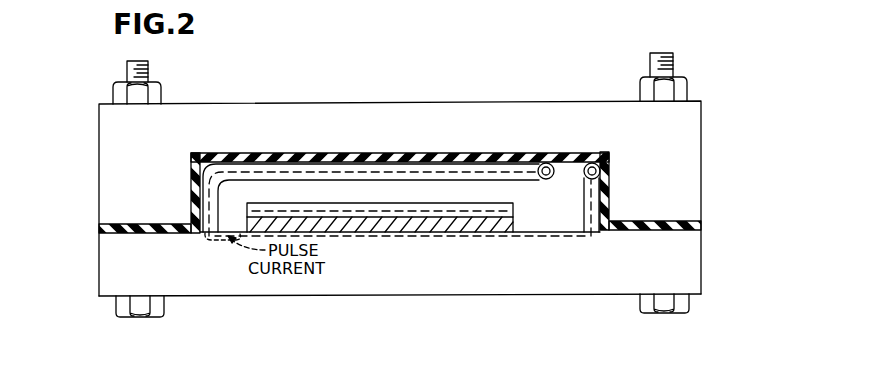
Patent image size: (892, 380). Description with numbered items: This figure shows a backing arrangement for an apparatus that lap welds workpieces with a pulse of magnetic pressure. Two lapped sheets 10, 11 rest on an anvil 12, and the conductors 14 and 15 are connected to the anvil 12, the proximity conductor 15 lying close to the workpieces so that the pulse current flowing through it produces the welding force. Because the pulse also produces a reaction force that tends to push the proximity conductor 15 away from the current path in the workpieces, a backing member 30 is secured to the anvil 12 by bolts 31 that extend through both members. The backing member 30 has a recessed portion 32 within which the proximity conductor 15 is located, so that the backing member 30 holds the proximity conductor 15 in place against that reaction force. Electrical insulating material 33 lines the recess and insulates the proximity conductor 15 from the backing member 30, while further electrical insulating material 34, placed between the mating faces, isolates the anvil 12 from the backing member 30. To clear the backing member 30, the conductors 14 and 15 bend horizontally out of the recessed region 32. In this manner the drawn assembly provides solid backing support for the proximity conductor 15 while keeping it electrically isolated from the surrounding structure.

The lapped sheet 10 is at (512, 228).
The lapped sheet 11 is at (514, 206).
The anvil 12 is at (400, 287).
The conductor 14 is at (600, 208).
The proximity conductor 15 is at (496, 165).
The backing member 30 is at (694, 119).
The bolts 31 is at (127, 72).
The recessed portion 32 is at (324, 181).
The electrical insulating material 33 is at (190, 176).
The electrical insulating material 34 is at (100, 229).